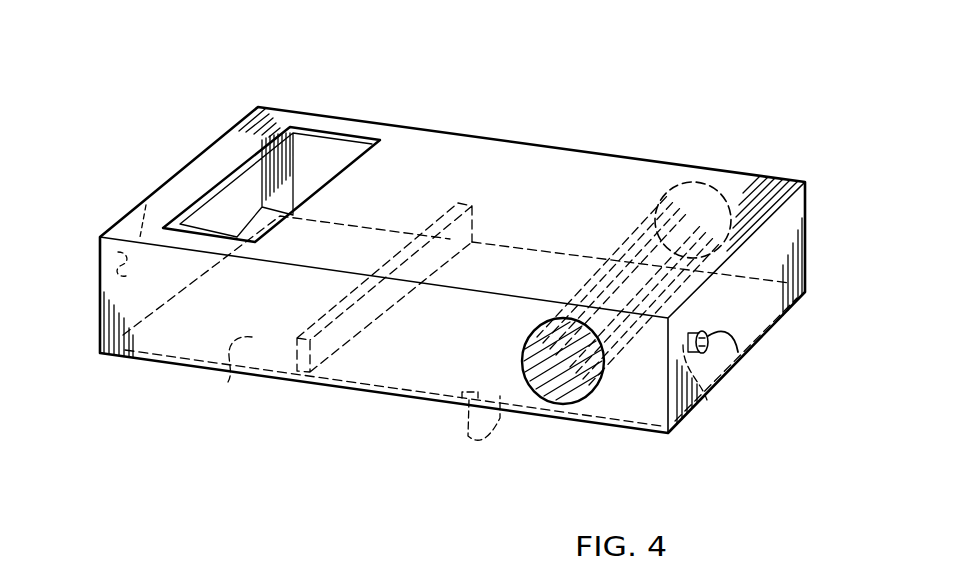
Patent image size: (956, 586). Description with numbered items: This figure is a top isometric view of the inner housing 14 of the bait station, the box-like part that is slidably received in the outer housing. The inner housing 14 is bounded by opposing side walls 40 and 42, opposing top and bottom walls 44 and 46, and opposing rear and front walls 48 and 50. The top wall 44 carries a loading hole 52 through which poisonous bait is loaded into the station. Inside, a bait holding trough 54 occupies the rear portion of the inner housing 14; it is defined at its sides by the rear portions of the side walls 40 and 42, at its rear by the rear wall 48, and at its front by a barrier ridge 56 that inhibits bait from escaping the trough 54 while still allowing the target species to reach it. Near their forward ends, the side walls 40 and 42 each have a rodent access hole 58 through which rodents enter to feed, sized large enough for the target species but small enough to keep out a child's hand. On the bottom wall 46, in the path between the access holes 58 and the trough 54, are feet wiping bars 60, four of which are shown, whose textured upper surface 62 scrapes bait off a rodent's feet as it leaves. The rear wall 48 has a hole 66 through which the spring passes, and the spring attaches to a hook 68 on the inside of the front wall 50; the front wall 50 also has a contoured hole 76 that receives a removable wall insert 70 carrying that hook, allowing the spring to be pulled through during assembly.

The inner housing 14 is at (722, 84).
The side wall 40 is at (807, 233).
The side wall 42 is at (145, 358).
The top wall 44 is at (582, 175).
The bottom wall 46 is at (387, 394).
The rear wall 48 is at (97, 278).
The front wall 50 is at (775, 318).
The loading hole 52 is at (322, 160).
The bait holding trough 54 is at (228, 380).
The barrier ridge 56 is at (340, 386).
The rodent access hole 58 is at (565, 405).
The feet wiping bars 60 is at (463, 441).
The textured upper surface 62 is at (547, 348).
The hole 66 is at (146, 205).
The hook 68 is at (707, 400).
The removable wall insert 70 is at (714, 351).
The contoured hole 76 is at (738, 352).